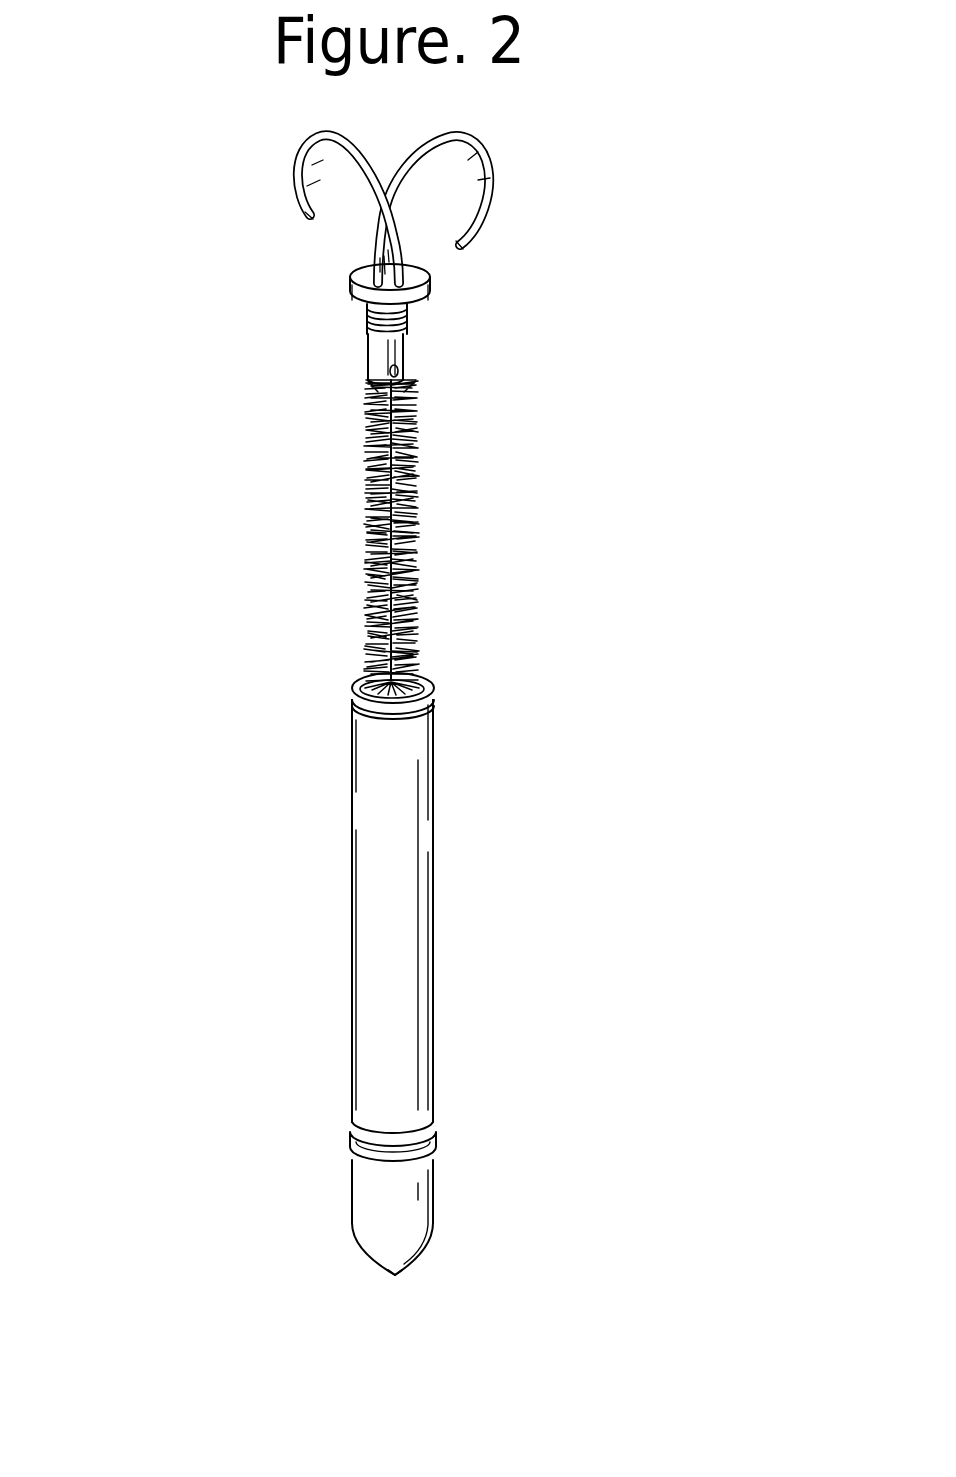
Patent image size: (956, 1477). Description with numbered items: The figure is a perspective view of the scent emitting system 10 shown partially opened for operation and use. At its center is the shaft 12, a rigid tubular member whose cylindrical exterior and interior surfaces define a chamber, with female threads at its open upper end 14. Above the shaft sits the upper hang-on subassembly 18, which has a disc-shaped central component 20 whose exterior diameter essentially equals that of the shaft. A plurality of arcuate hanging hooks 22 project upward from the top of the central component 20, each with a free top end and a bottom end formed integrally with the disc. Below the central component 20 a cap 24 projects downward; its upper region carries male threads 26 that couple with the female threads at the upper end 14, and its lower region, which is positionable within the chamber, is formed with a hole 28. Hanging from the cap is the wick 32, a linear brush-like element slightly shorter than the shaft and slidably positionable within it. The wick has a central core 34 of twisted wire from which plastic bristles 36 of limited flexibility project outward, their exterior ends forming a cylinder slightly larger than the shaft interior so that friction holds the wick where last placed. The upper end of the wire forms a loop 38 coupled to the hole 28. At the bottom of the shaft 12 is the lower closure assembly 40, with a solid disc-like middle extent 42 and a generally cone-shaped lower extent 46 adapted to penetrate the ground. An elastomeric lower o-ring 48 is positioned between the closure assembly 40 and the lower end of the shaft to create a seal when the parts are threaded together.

The scent emitting system 10 is at (205, 498).
The shaft 12 is at (368, 887).
The open upper end 14 is at (423, 673).
The upper hang-on subassembly 18 is at (500, 197).
The disc-shaped central component 20 is at (432, 285).
The hanging hooks 22 is at (424, 151).
The cap 24 is at (410, 335).
The male threads 26 is at (406, 322).
The hole 28 is at (413, 372).
The wick 32 is at (418, 501).
The central core 34 is at (418, 558).
The bristles 36 is at (418, 603).
The loop 38 is at (368, 378).
The lower closure assembly 40 is at (360, 1245).
The middle extent 42 is at (425, 1195).
The lower extent 46 is at (401, 1279).
The lower o-ring 48 is at (423, 1142).